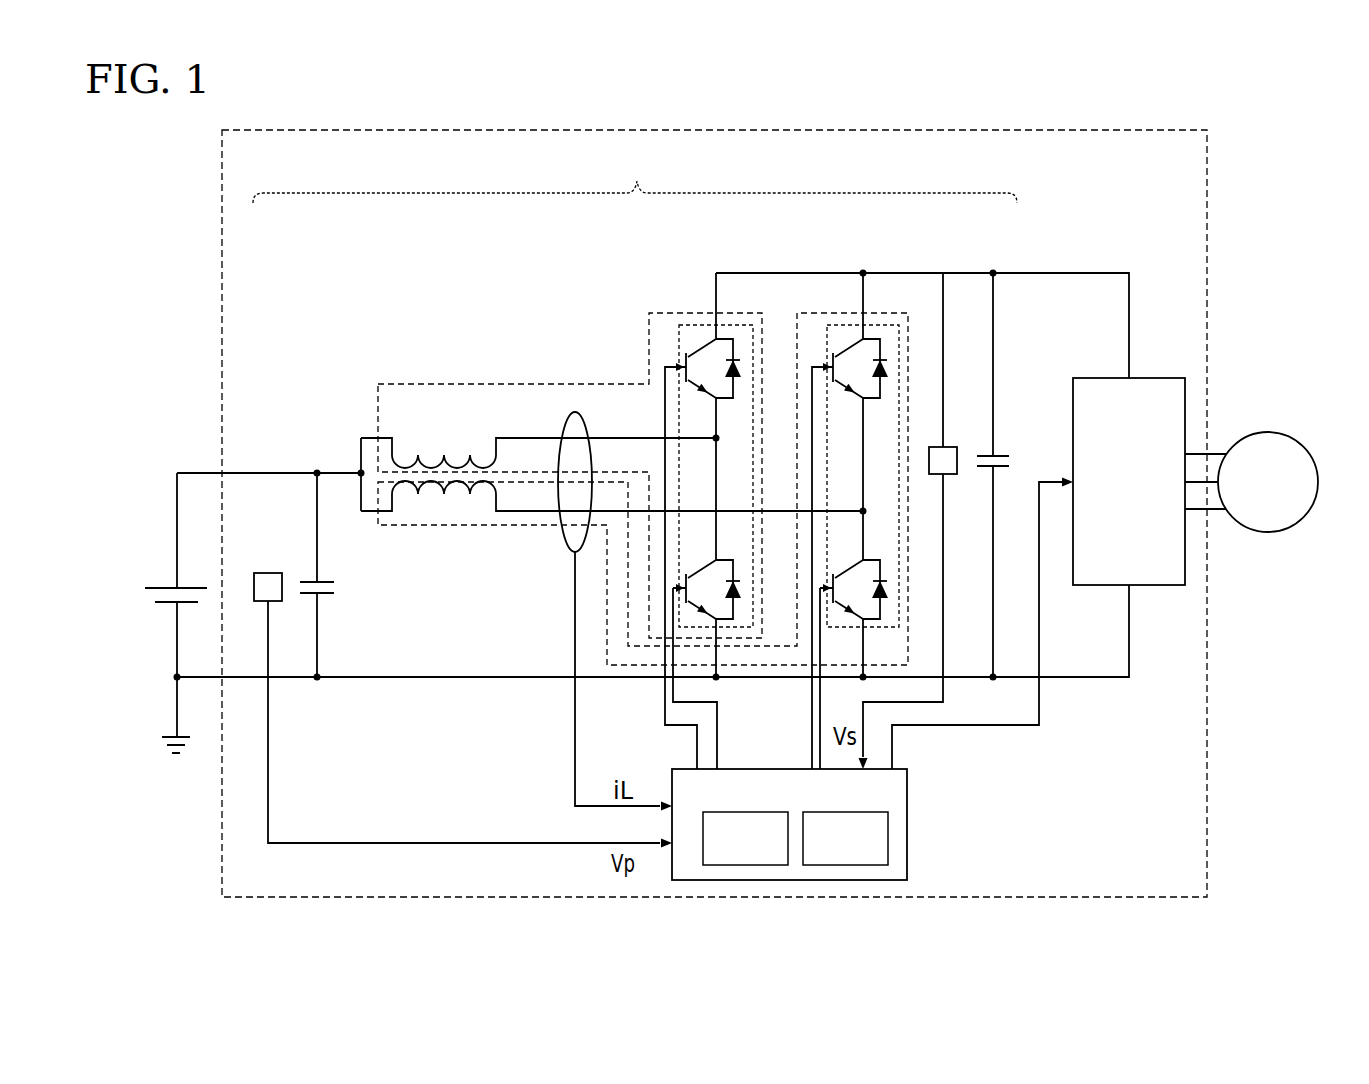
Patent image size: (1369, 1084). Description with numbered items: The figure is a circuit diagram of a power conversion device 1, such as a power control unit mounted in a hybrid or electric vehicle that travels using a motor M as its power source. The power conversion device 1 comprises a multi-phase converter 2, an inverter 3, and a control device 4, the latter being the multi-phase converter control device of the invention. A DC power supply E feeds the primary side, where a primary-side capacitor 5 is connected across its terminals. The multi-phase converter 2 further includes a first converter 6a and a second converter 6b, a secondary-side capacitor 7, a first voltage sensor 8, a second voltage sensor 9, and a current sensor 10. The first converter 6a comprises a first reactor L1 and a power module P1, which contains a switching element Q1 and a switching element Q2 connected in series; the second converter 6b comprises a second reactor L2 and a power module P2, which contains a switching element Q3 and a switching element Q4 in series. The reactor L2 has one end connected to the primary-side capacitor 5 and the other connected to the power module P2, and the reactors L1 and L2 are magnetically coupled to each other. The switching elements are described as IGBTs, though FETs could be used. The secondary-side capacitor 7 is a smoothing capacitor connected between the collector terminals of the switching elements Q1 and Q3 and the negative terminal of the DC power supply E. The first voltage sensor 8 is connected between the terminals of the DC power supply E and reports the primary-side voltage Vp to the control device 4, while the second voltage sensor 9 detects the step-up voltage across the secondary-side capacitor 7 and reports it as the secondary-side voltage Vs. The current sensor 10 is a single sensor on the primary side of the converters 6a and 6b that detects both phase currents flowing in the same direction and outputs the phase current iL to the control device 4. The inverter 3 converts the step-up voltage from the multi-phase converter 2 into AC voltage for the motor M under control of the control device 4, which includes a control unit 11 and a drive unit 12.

The power conversion device 1 is at (1207, 173).
The multi-phase converter 2 is at (635, 175).
The inverter 3 is at (1080, 378).
The control device 4 is at (789, 822).
The primary-side capacitor 5 is at (327, 580).
The first converter 6a is at (561, 444).
The second converter 6b is at (634, 457).
The secondary-side capacitor 7 is at (1003, 456).
The first voltage sensor 8 is at (268, 573).
The second voltage sensor 9 is at (943, 447).
The current sensor 10 is at (575, 412).
The control unit 11 is at (745, 865).
The drive unit 12 is at (845, 865).
The DC power supply E is at (157, 586).
The first reactor L1 is at (483, 458).
The second reactor L2 is at (485, 490).
The power module P1 is at (709, 508).
The power module P2 is at (855, 497).
The switching element Q1 is at (700, 392).
The switching element Q2 is at (703, 560).
The switching element Q3 is at (847, 392).
The switching element Q4 is at (850, 560).
The motor M is at (1265, 432).